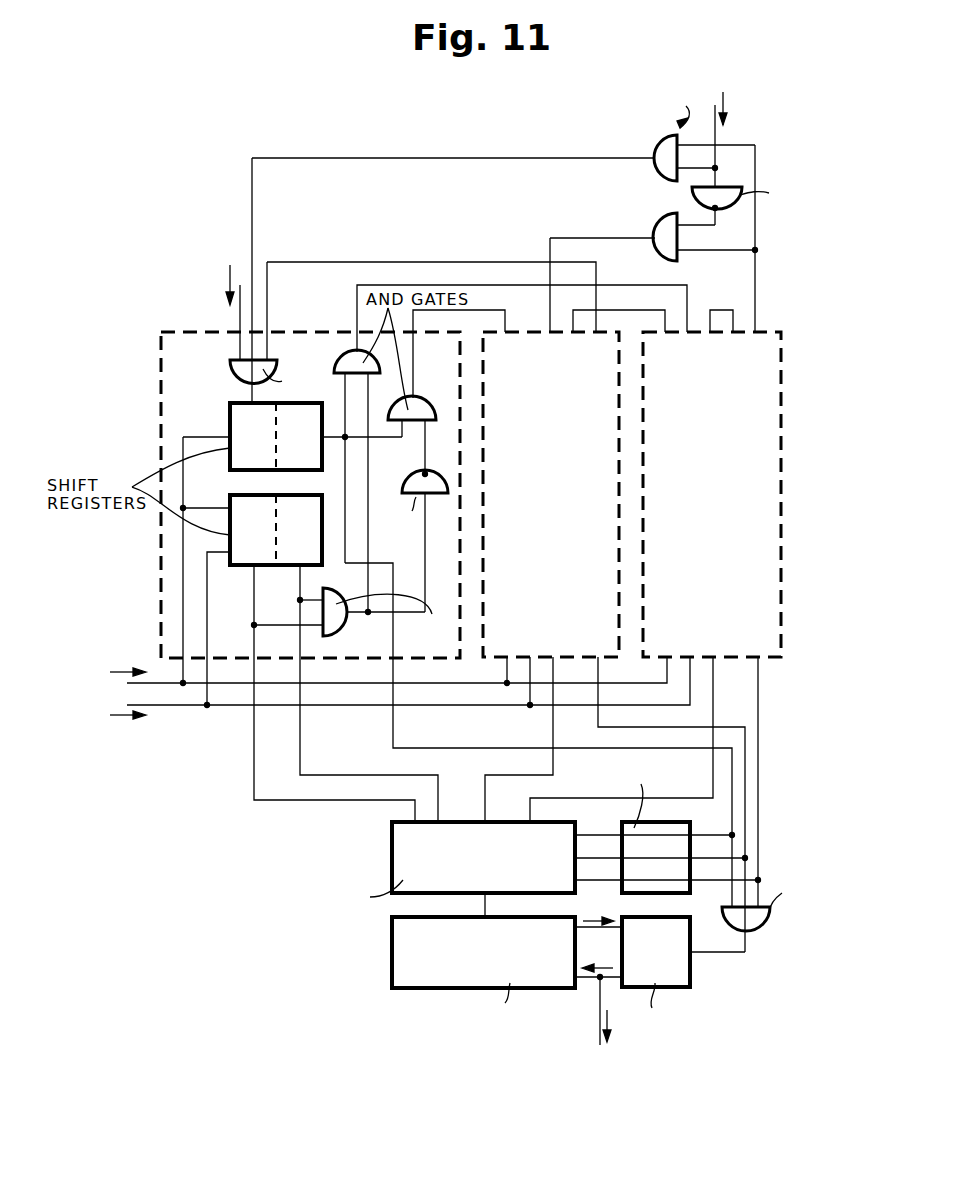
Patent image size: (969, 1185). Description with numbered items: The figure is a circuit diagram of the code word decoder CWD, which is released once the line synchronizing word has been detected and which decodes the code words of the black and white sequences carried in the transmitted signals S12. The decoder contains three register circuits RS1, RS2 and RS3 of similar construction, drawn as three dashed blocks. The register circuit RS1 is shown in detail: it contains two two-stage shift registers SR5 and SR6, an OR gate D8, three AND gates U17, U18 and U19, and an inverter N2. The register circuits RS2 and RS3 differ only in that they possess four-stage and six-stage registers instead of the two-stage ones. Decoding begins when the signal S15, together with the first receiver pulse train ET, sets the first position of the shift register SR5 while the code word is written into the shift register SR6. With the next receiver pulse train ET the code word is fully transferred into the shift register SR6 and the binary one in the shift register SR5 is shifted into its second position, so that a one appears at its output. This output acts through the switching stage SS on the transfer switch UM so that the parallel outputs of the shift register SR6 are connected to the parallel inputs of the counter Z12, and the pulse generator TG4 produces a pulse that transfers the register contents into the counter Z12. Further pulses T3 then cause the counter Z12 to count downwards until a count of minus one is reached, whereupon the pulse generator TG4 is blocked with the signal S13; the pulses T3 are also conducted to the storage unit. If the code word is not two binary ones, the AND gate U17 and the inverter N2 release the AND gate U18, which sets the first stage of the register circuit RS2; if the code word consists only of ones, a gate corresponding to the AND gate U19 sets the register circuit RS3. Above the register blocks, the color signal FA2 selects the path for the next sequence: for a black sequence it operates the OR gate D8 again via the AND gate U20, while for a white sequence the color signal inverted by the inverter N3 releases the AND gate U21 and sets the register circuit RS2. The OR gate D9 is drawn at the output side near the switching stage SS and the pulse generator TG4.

The AND gate U20 is at (668, 143).
The AND gate U21 is at (668, 229).
The inverter N3 is at (733, 198).
The color signal FA2 is at (739, 139).
The signal S15 is at (213, 285).
The register circuit RS1 is at (158, 402).
The OR gate D8 is at (232, 365).
The AND gate U19 is at (340, 361).
The AND gate U18 is at (431, 411).
The inverter N2 is at (415, 480).
The two-stage shift register SR5 is at (252, 436).
The two-stage shift register SR6 is at (252, 600).
The AND gate U17 is at (344, 620).
The register circuit RS2 is at (551, 494).
The register circuit RS3 is at (712, 494).
The receiver pulse train ET is at (388, 665).
The transmitted signals S12 is at (144, 722).
The transfer switch UM is at (409, 869).
The switching stage SS is at (628, 823).
The counter Z12 is at (483, 968).
The pulse generator TG4 is at (696, 978).
The signal S13 is at (598, 910).
The timing pulses T3 is at (604, 993).
The OR gate D9 is at (764, 925).
The code word decoder CWD is at (254, 852).